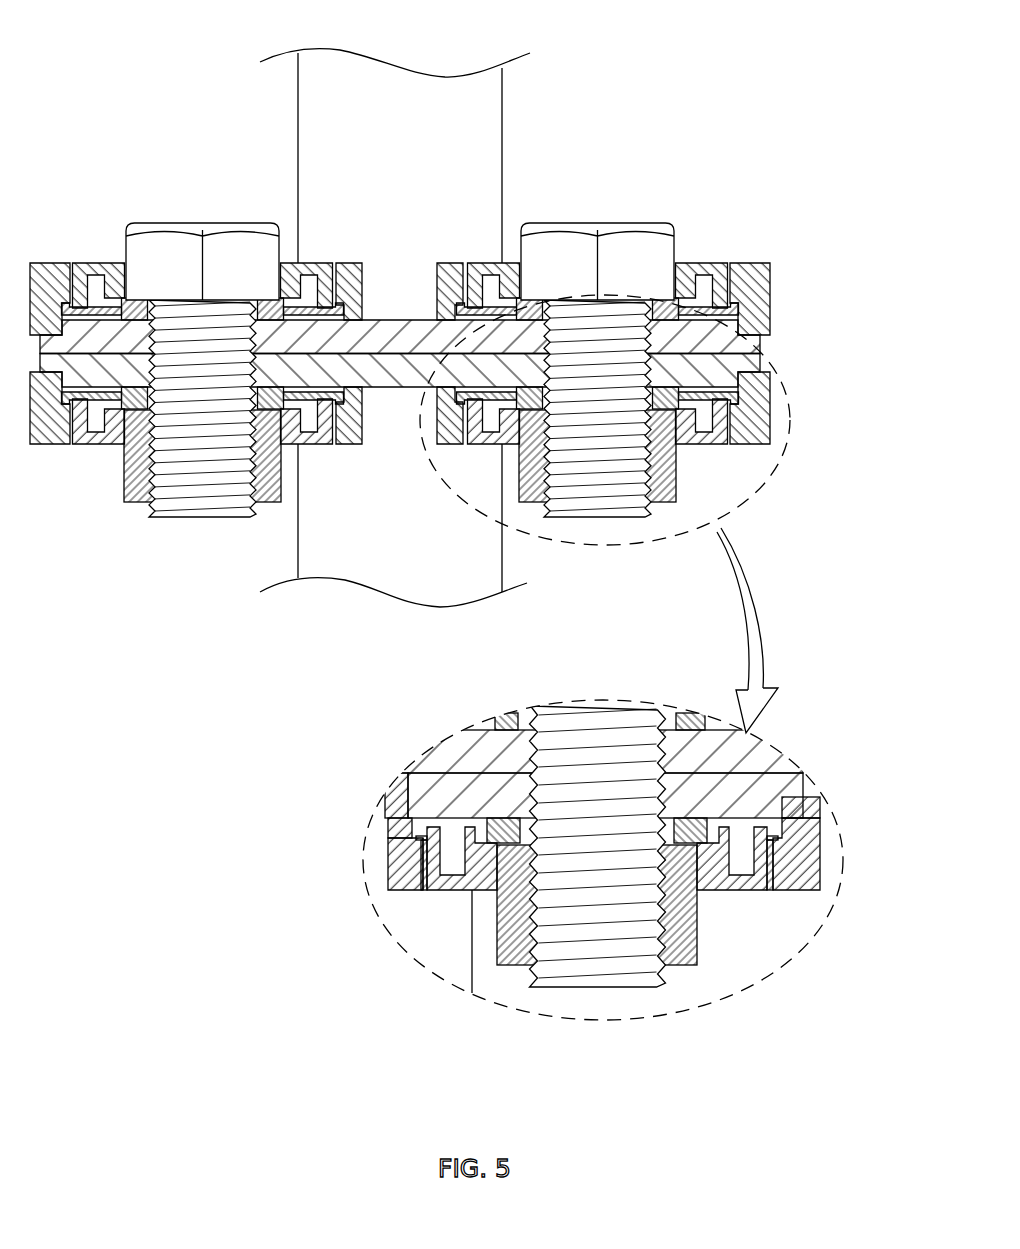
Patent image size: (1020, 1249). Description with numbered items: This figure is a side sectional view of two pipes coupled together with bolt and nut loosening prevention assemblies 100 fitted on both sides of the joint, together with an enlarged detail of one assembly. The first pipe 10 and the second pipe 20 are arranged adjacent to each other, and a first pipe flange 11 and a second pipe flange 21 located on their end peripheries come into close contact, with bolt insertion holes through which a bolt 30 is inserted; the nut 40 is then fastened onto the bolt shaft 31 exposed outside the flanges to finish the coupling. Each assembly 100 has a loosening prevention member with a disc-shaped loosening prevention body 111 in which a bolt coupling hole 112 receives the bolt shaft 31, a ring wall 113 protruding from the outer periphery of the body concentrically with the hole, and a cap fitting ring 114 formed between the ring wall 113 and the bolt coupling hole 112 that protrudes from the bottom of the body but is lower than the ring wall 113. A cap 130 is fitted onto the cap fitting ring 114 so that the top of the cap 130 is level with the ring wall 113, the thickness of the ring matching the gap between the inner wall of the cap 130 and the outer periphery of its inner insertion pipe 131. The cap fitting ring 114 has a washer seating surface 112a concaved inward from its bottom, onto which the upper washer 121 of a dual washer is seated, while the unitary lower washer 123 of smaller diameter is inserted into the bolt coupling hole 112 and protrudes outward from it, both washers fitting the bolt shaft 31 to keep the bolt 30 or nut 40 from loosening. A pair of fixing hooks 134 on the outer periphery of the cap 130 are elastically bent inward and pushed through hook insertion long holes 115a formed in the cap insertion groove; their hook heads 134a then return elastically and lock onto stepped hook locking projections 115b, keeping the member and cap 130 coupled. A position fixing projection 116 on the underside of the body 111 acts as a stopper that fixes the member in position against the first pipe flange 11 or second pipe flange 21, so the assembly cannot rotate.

The bolt and nut loosening prevention assembly 100 is at (433, 543).
The first pipe 10 is at (360, 557).
The first pipe flange 11 is at (735, 340).
The second pipe 20 is at (397, 97).
The second pipe flange 21 is at (700, 333).
The bolt 30 is at (632, 248).
The bolt shaft 31 is at (600, 958).
The nut 40 is at (667, 467).
The loosening prevention body 111 is at (400, 832).
The bolt coupling hole 112 is at (425, 815).
The washer seating surface 112a is at (442, 840).
The ring wall 113 is at (410, 885).
The cap fitting ring 114 is at (752, 880).
The hook insertion long hole 115a is at (425, 800).
The hook locking projection 115b is at (418, 855).
The position fixing projection 116 is at (800, 810).
The upper washer 121 is at (720, 892).
The lower washer 123 is at (690, 728).
The cap 130 is at (740, 868).
The inner insertion pipe 131 is at (478, 860).
The fixing hook 134 is at (760, 858).
The hook head 134a is at (772, 838).